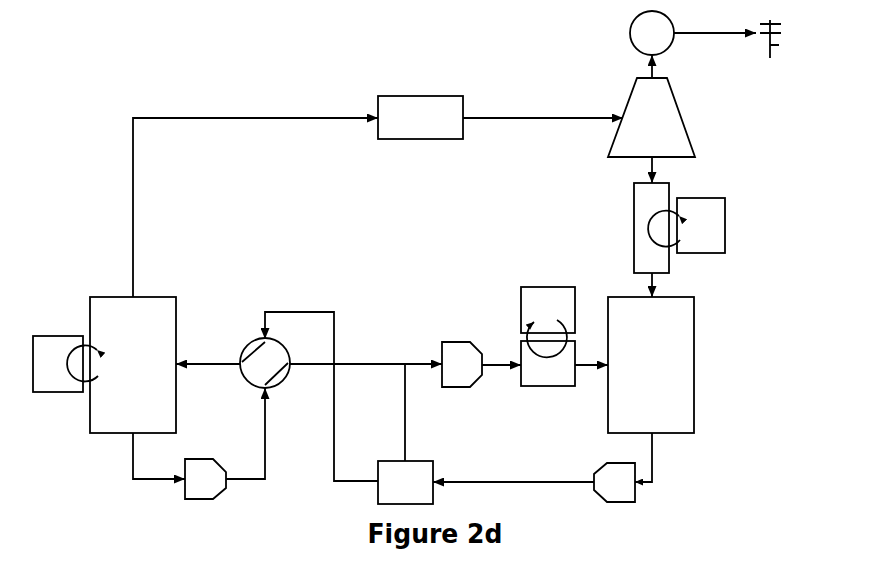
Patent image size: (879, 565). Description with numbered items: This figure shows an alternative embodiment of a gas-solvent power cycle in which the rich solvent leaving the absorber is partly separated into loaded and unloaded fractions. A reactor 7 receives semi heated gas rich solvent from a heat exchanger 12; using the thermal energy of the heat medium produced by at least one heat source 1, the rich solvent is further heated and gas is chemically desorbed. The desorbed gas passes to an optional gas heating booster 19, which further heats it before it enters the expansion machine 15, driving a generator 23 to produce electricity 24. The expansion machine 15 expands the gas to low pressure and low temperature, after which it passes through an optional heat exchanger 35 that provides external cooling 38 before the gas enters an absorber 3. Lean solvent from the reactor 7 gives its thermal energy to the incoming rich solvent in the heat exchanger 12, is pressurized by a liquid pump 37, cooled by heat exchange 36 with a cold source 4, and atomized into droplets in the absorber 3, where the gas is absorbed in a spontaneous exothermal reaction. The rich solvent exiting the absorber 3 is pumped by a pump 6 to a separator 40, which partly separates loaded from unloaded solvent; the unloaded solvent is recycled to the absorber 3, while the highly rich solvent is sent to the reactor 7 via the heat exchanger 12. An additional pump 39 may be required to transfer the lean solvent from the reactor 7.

The heat source 1 is at (62, 335).
The reactor 7 is at (105, 297).
The heat exchanger 12 is at (252, 343).
The liquid pump 37 is at (213, 459).
The additional pump 39 is at (452, 342).
The separator 40 is at (392, 460).
The cold source 4 is at (522, 287).
The heat exchange 36 is at (522, 386).
The absorber 3 is at (695, 370).
The pump 6 is at (597, 473).
The heat exchanger 35 is at (634, 232).
The external cooling 38 is at (727, 230).
The expansion machine 15 is at (684, 122).
The generator 23 is at (630, 37).
The electricity 24 is at (773, 45).
The gas heating booster 19 is at (401, 96).